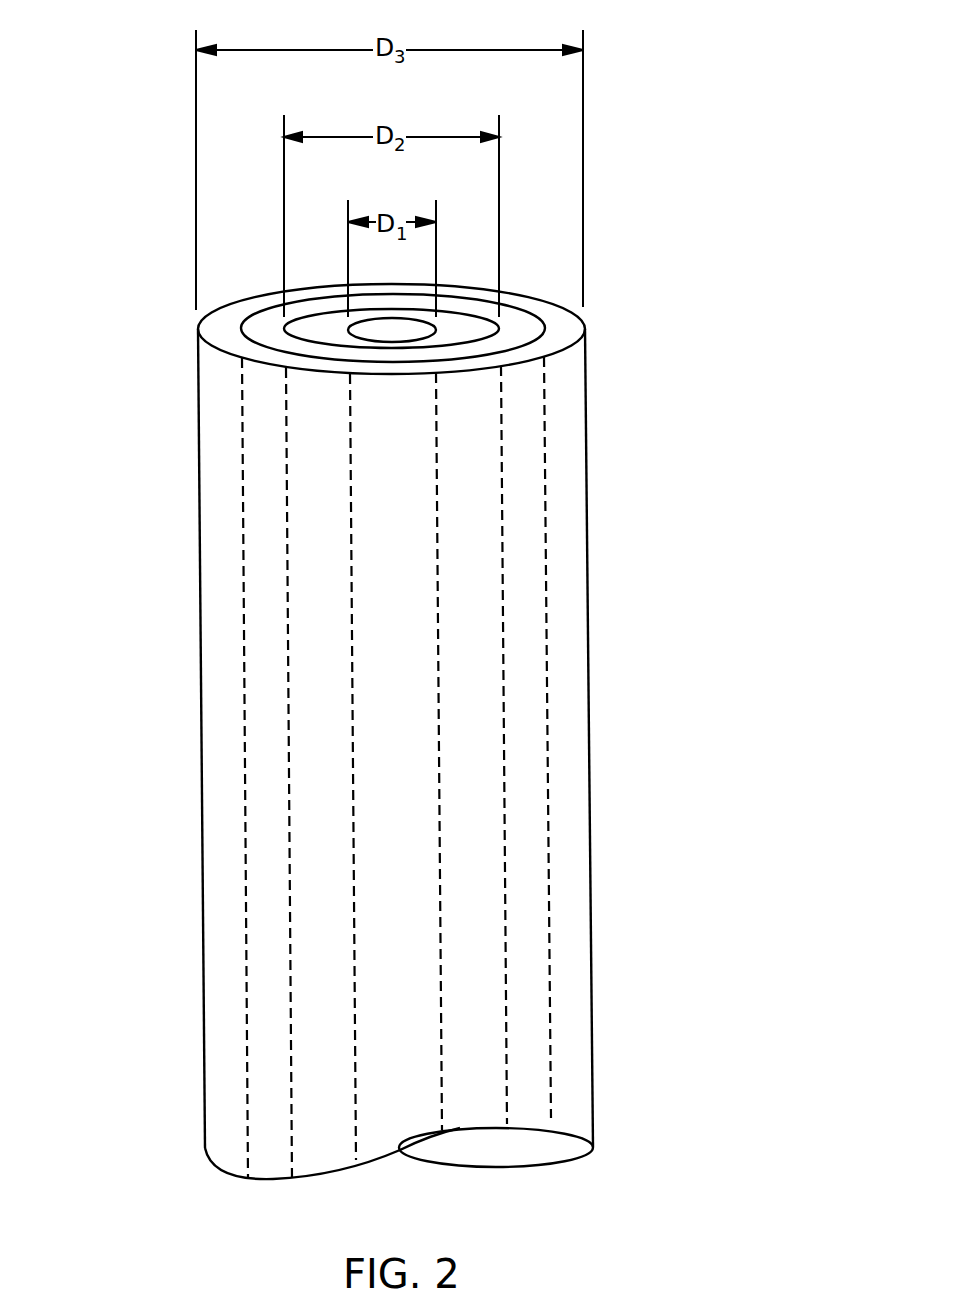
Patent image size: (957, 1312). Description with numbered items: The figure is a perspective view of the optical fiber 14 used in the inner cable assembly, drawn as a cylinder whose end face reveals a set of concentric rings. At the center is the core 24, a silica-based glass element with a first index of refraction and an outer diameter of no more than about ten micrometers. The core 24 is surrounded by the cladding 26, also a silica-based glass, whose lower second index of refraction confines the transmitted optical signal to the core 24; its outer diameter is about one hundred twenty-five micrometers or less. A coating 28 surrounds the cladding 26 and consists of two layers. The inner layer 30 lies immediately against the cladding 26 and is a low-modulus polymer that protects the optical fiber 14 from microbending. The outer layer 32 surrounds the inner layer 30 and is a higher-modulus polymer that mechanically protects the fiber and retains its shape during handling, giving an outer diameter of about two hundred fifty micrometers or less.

The optical fiber 14 is at (137, 483).
The core 24 is at (437, 477).
The cladding 26 is at (503, 624).
The coating 28 is at (605, 706).
The inner layer 30 is at (245, 857).
The outer layer 32 is at (202, 750).